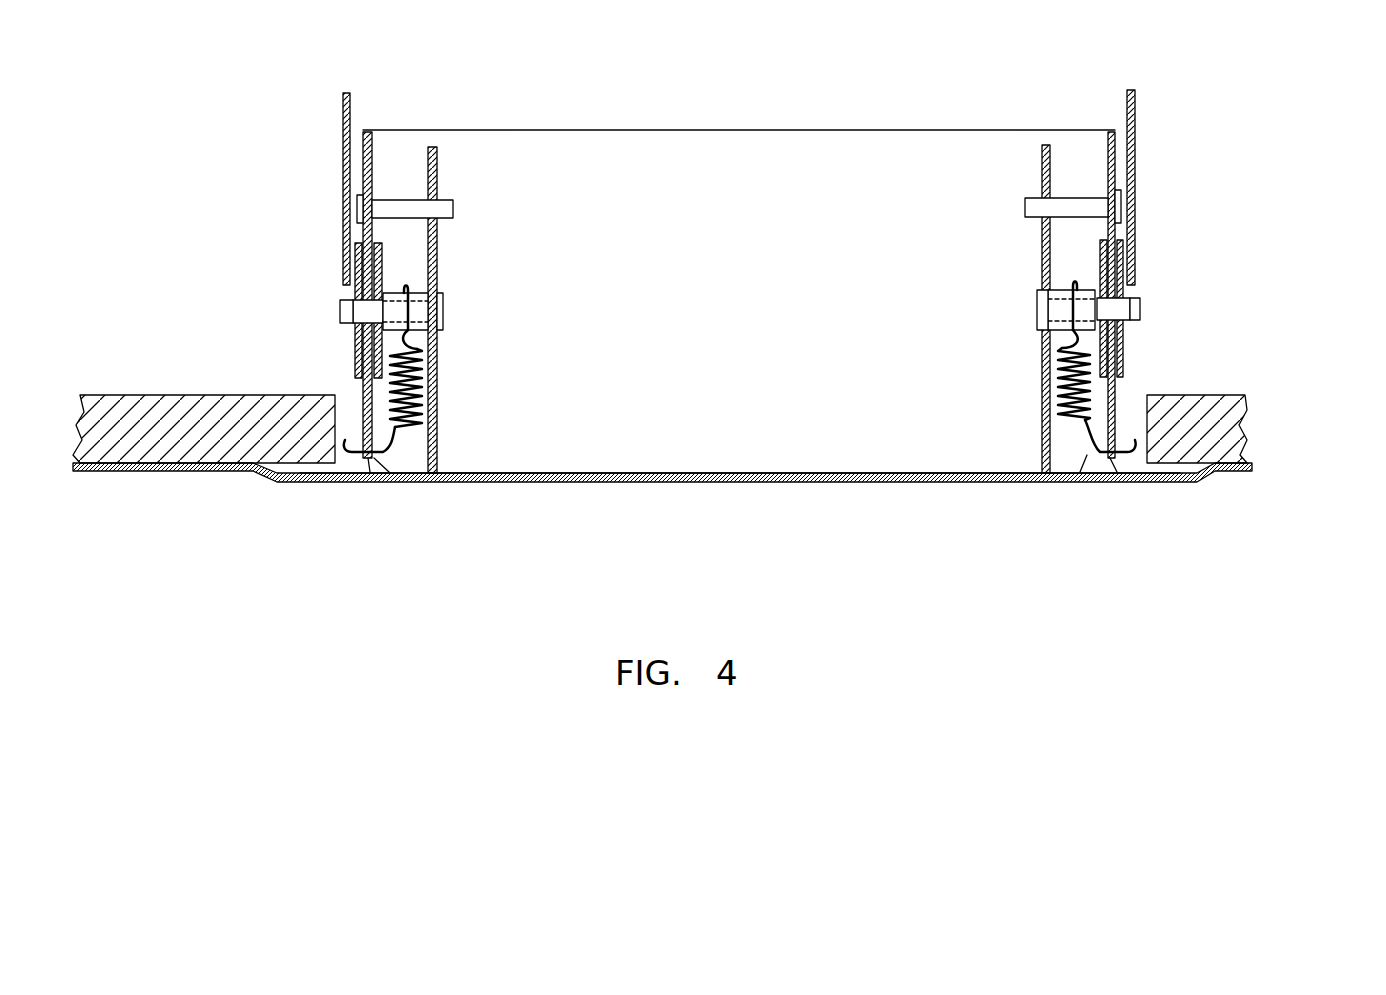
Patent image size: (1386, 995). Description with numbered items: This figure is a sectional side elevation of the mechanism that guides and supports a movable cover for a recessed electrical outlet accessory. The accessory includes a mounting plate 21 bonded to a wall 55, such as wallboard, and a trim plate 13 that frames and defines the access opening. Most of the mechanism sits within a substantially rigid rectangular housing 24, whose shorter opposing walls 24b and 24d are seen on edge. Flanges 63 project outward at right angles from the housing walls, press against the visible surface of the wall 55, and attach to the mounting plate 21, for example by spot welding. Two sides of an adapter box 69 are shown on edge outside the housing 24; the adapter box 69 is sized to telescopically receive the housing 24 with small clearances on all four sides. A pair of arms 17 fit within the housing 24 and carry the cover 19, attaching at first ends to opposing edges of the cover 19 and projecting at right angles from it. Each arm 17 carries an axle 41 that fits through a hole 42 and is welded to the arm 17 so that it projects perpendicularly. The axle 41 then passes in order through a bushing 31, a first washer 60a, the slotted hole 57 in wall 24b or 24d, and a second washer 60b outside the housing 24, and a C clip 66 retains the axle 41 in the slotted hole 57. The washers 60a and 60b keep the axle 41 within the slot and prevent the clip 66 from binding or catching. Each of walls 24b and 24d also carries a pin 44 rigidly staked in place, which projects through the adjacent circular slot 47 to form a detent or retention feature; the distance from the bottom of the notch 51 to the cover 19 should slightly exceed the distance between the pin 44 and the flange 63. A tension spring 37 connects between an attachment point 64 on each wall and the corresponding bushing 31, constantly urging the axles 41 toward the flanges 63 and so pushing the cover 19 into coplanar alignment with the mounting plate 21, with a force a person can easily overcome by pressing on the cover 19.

The trim plate 13 is at (1087, 478).
The arm 17 is at (437, 430).
The cover 19 is at (782, 482).
The mounting plate 21 is at (202, 474).
The housing 24 is at (805, 106).
The second wall 24b is at (373, 149).
The fourth wall 24d is at (1114, 177).
The bushing 31 is at (430, 287).
The tension spring 37 is at (372, 402).
The axle 41 is at (340, 309).
The hole 42 is at (443, 310).
The pin 44 is at (405, 205).
The circular slot 47 is at (385, 263).
The notch 51 is at (380, 285).
The wall 55 is at (275, 408).
The slotted hole 57 is at (1113, 287).
The first washer 60a is at (435, 240).
The second washer 60b is at (350, 247).
The flange 63 is at (322, 482).
The attachment point 64 is at (378, 465).
The C clip 66 is at (347, 293).
The adapter box 69 is at (345, 165).